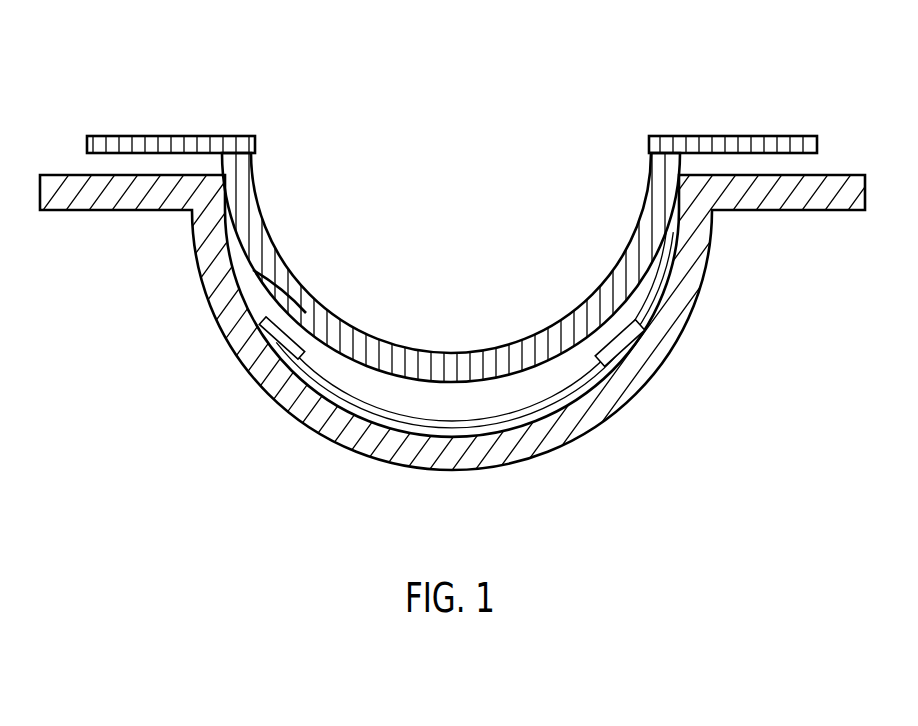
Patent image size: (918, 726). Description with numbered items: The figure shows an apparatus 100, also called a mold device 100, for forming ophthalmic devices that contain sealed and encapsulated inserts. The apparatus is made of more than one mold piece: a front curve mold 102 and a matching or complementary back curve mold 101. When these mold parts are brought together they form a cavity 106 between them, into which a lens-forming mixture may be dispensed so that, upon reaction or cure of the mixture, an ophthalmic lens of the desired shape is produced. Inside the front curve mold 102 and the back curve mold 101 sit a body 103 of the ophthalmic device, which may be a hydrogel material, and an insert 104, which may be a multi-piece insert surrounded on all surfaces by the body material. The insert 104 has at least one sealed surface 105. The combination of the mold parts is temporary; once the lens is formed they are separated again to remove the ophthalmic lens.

The apparatus 100 is at (365, 73).
The back curve mold 101 is at (620, 256).
The front curve mold 102 is at (277, 373).
The body 103 is at (384, 383).
The insert 104 is at (636, 339).
The sealed surface 105 is at (614, 376).
The cavity 106 is at (256, 307).